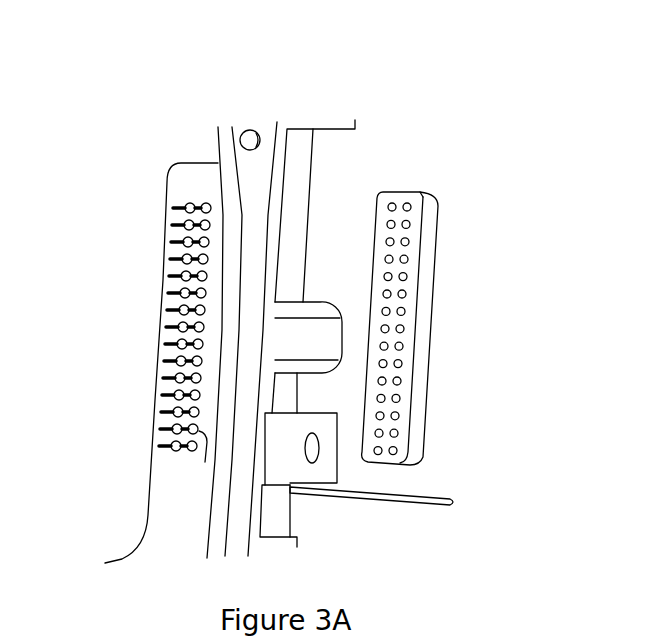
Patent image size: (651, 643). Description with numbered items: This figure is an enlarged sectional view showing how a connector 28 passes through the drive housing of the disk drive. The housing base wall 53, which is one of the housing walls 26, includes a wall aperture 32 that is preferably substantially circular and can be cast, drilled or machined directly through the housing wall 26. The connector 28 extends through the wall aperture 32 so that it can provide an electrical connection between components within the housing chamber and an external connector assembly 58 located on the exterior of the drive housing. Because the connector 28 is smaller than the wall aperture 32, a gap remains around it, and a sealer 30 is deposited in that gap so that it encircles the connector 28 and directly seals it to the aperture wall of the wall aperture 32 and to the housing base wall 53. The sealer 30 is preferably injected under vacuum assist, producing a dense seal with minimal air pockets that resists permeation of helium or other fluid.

The housing wall 26 is at (262, 171).
The housing base wall 53 is at (253, 208).
The external connector assembly 58 is at (428, 247).
The connector 28 is at (174, 449).
The sealer 30 is at (207, 203).
The wall aperture 32 is at (205, 462).